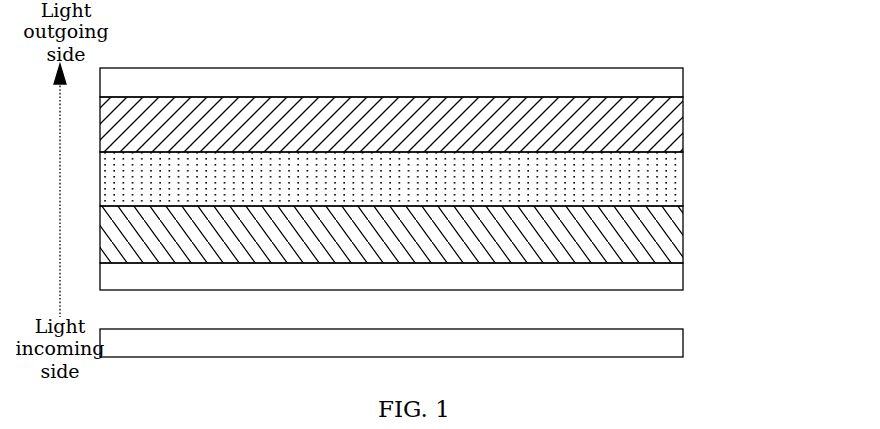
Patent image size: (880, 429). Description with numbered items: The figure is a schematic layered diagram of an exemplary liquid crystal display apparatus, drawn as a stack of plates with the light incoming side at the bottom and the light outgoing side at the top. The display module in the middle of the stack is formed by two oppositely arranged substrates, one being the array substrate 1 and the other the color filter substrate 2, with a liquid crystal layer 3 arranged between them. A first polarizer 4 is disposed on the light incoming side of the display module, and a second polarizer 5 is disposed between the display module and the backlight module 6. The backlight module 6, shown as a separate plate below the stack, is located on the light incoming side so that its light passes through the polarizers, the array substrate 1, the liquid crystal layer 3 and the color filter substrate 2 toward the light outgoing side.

The array substrate 1 is at (657, 240).
The color filter substrate 2 is at (655, 116).
The liquid crystal layer 3 is at (657, 184).
The first polarizer 4 is at (657, 277).
The second polarizer 5 is at (655, 85).
The backlight module 6 is at (660, 352).